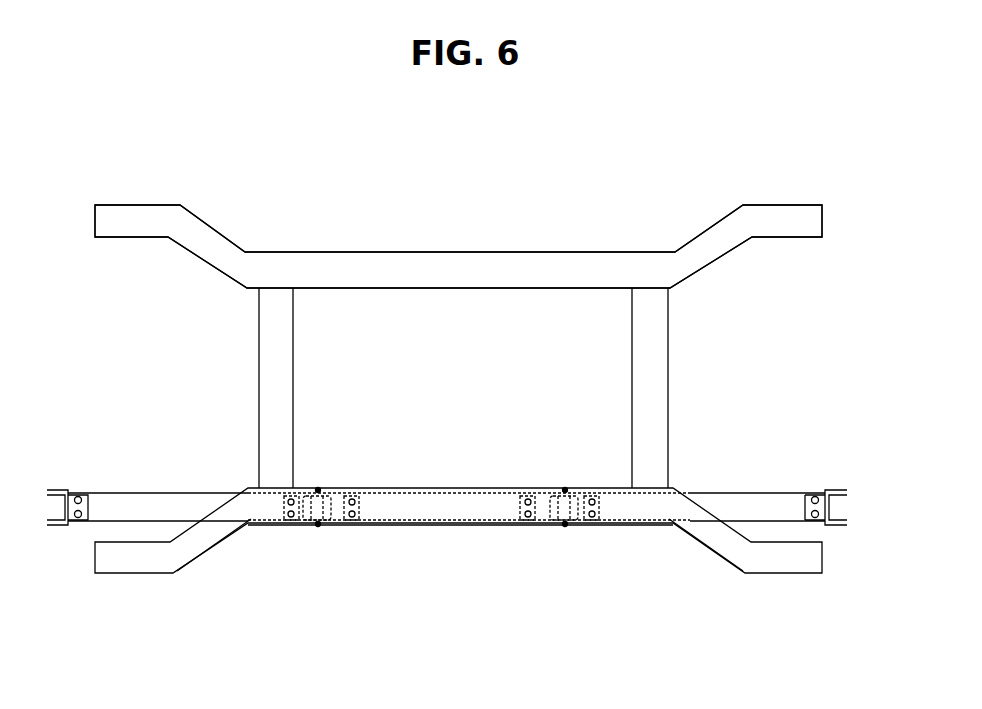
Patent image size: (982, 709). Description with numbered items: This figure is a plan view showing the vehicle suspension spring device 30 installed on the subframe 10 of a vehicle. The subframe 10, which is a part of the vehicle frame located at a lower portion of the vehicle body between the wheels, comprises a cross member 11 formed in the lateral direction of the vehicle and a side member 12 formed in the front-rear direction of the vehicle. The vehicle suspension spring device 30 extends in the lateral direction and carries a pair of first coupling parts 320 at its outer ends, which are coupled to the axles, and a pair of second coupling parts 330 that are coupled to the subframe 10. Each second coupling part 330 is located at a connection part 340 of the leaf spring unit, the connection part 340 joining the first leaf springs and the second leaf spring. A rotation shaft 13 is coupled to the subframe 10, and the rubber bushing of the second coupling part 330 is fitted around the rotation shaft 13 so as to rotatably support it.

The subframe 10 is at (442, 253).
The cross member 11 is at (298, 252).
The side member 12 is at (660, 353).
The rotation shaft 13 is at (318, 488).
The vehicle suspension spring device 30 is at (113, 575).
The first coupling part 320 is at (52, 490).
The second coupling part 330 is at (318, 527).
The connection part 340 is at (340, 521).